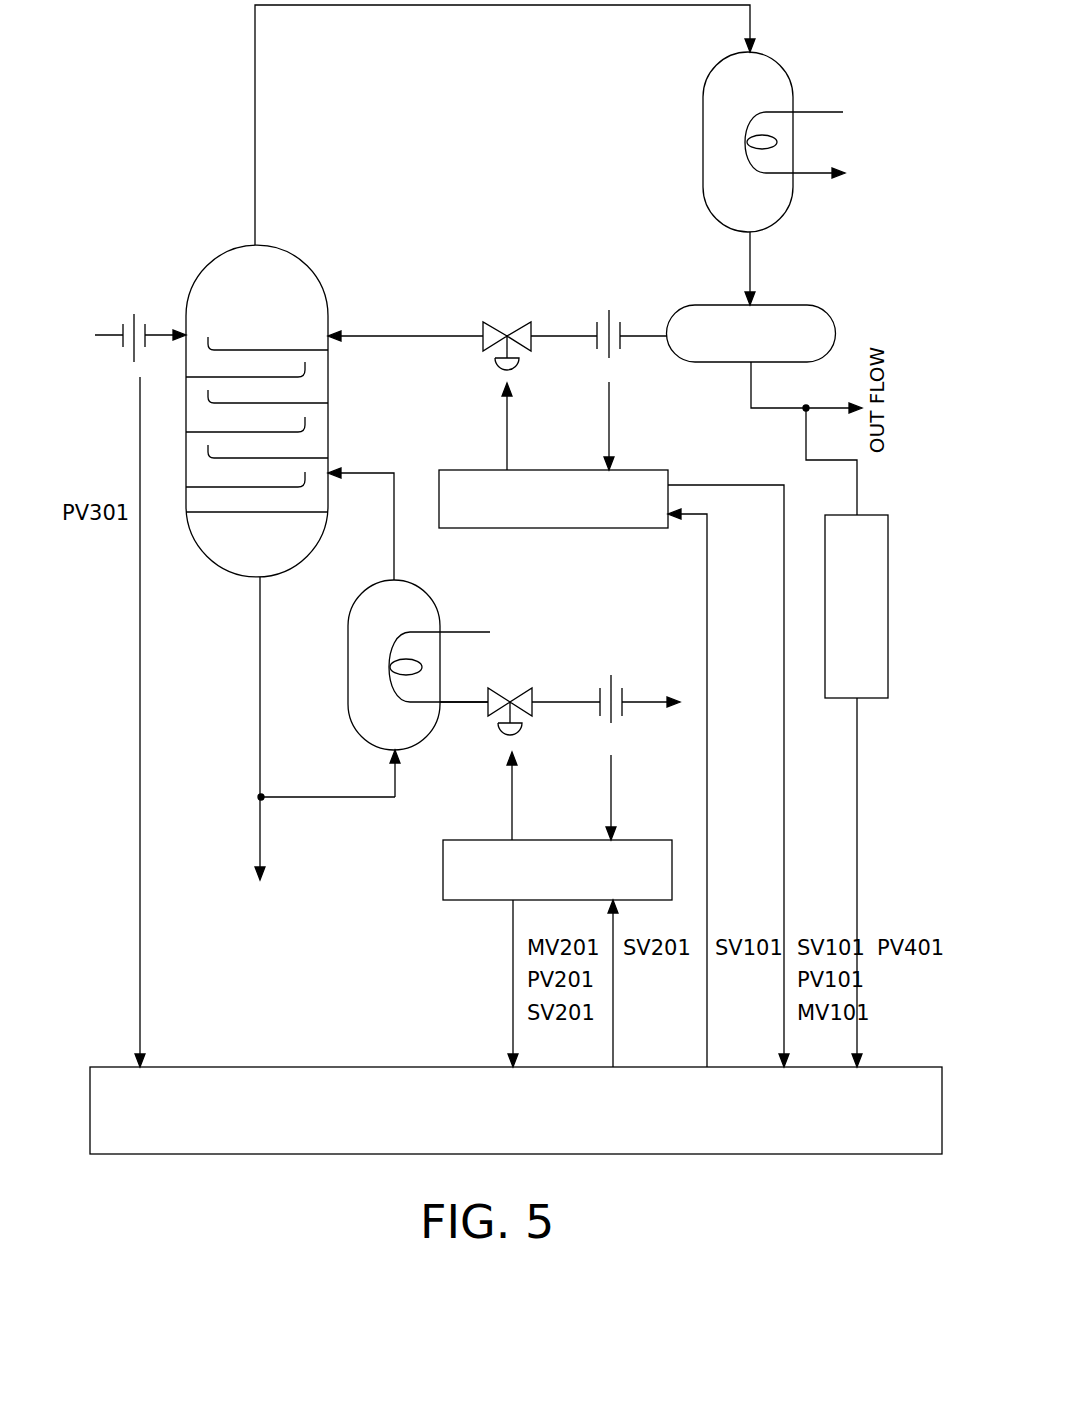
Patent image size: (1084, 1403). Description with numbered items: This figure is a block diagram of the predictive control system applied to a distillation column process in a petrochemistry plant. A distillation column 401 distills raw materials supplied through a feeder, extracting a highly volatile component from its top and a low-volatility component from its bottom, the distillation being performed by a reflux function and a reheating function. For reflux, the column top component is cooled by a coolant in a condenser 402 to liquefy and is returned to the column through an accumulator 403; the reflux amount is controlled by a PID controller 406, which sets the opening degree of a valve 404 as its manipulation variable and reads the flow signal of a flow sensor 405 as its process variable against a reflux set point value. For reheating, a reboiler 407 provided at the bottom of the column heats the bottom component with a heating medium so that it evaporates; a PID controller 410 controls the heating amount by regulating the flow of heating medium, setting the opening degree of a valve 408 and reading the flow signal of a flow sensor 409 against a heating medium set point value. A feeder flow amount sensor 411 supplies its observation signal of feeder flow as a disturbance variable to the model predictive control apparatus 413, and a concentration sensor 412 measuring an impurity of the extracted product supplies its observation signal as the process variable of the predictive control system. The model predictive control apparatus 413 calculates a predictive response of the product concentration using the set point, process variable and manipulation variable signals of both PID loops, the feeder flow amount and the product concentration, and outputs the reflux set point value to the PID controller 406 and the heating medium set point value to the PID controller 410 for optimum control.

The distillation column 401 is at (310, 262).
The condenser 402 is at (703, 145).
The accumulator 403 is at (805, 305).
The valve 404 is at (506, 320).
The flow sensor 405 is at (609, 306).
The PID controller 406 is at (464, 470).
The reboiler 407 is at (348, 666).
The valve 408 is at (490, 718).
The flow sensor 409 is at (611, 673).
The PID controller 410 is at (443, 873).
The feeder flow amount sensor 411 is at (134, 312).
The concentration sensor 412 is at (830, 699).
The model predictive control apparatus 413 is at (311, 1067).